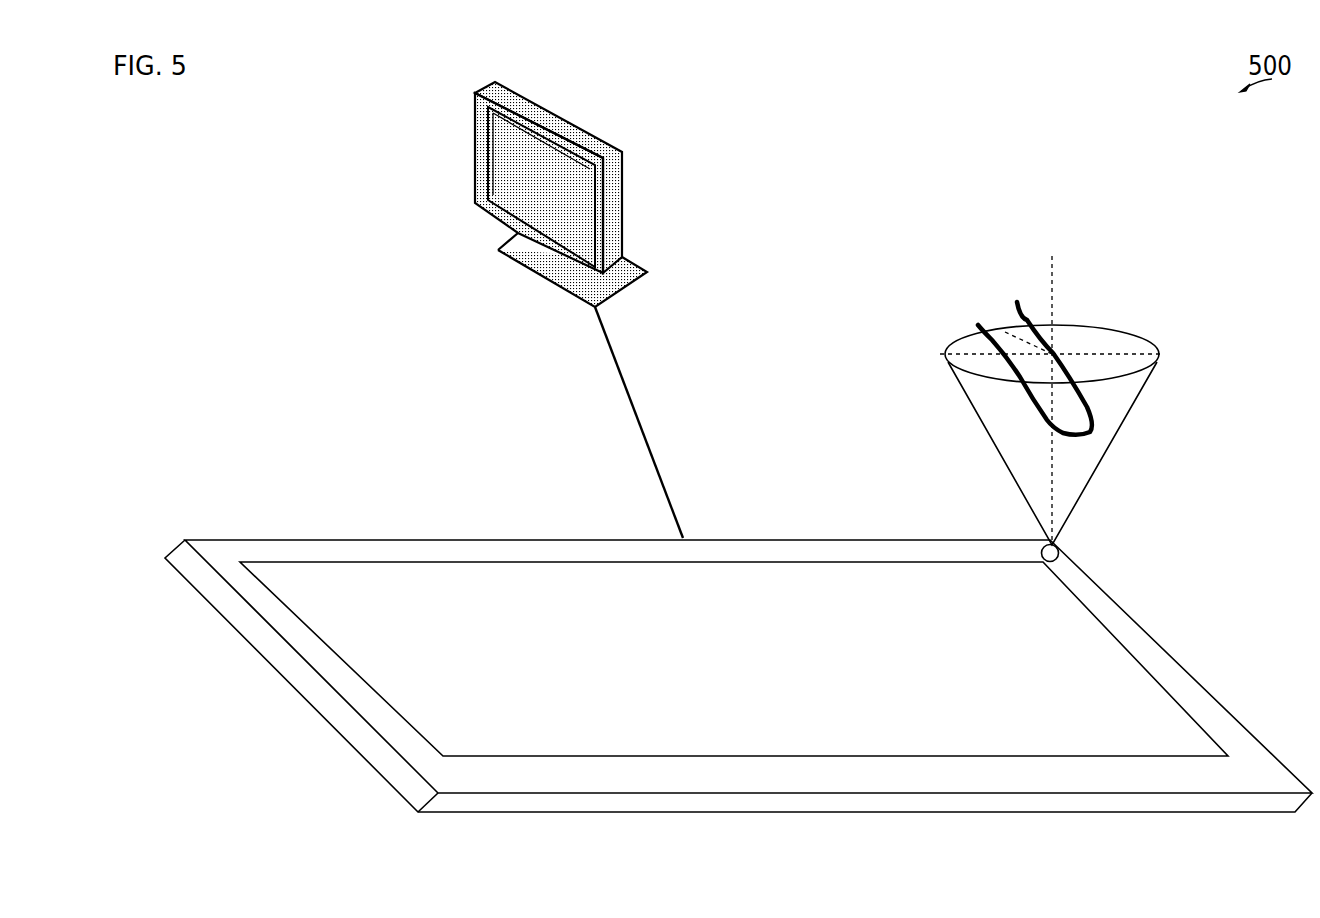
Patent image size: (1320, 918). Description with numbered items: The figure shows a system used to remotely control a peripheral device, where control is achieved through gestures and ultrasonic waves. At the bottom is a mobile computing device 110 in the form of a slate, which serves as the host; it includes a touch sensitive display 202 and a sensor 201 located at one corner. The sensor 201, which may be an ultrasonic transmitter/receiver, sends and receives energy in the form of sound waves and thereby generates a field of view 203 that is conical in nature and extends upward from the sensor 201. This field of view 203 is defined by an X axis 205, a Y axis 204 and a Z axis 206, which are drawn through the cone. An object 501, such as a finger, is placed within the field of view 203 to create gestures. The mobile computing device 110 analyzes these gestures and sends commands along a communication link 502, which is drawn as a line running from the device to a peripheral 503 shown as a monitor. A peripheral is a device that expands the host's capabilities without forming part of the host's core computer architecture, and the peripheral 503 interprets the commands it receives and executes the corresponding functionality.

The mobile computing device 110 is at (238, 630).
The touch sensitive display 202 is at (735, 677).
The sensor 201 is at (1167, 573).
The field of view 203 is at (1115, 442).
The Y axis 204 is at (998, 322).
The X axis 205 is at (853, 372).
The Z axis 206 is at (1046, 238).
The object 501 is at (978, 325).
The communication link 502 is at (648, 430).
The peripheral 503 is at (640, 260).